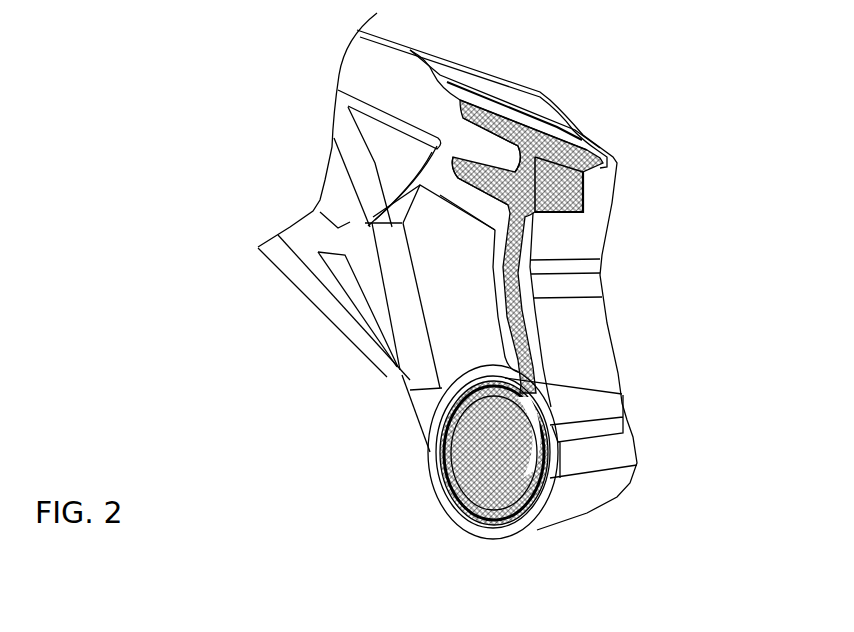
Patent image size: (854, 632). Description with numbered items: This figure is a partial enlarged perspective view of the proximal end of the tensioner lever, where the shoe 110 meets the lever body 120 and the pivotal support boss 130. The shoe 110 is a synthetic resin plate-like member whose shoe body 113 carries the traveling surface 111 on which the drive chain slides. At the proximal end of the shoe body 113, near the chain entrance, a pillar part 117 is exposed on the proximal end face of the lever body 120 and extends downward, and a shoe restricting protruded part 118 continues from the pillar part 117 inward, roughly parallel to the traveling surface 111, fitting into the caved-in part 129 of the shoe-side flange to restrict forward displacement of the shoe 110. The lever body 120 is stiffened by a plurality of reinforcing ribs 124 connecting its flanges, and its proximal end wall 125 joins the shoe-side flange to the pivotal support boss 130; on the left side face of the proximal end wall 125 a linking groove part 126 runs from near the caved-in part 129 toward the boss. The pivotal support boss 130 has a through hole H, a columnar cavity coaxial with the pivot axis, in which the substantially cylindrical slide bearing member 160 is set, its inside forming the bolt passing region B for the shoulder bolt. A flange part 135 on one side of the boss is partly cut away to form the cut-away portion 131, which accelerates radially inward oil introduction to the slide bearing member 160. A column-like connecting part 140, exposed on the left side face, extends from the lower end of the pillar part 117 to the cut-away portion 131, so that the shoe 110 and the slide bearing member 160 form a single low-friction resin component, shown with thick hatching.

The shoe 110 is at (600, 143).
The traveling surface 111 is at (533, 110).
The shoe body 113 is at (500, 100).
The pillar part 117 is at (583, 198).
The shoe restricting protruded part 118 is at (470, 170).
The caved-in part 129 is at (473, 152).
The lever body 120 is at (299, 266).
The reinforcing ribs 124 is at (377, 280).
The proximal end wall 125 is at (592, 330).
The linking groove part 126 is at (602, 297).
The connecting part 140 is at (535, 264).
The pivotal support boss 130 is at (621, 490).
The cut-away portion 131 is at (623, 394).
The flange part 135 is at (625, 433).
The through hole H is at (640, 465).
The slide bearing member 160 is at (433, 473).
The bolt passing region B is at (452, 507).